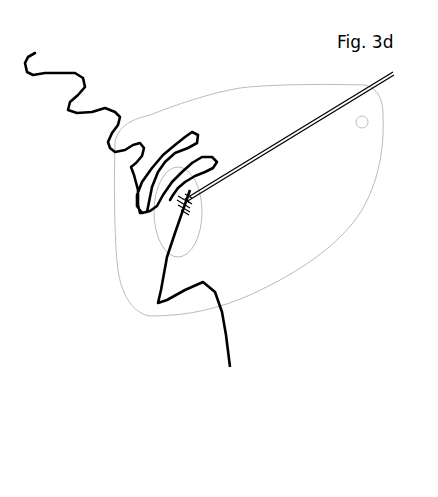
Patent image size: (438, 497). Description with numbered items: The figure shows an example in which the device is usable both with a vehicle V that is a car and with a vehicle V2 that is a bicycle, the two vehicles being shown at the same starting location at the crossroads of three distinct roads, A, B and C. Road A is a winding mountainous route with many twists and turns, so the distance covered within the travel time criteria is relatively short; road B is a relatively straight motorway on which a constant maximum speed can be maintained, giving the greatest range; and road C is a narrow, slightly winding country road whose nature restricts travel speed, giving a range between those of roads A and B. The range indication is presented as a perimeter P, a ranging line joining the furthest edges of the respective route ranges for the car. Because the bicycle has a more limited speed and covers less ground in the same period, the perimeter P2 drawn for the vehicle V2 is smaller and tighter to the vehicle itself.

The road A is at (121, 133).
The road B is at (289, 137).
The road C is at (194, 278).
The perimeter P is at (248, 200).
The perimeter P2 is at (190, 216).
The vehicle V is at (196, 207).
The vehicle V2 is at (212, 206).